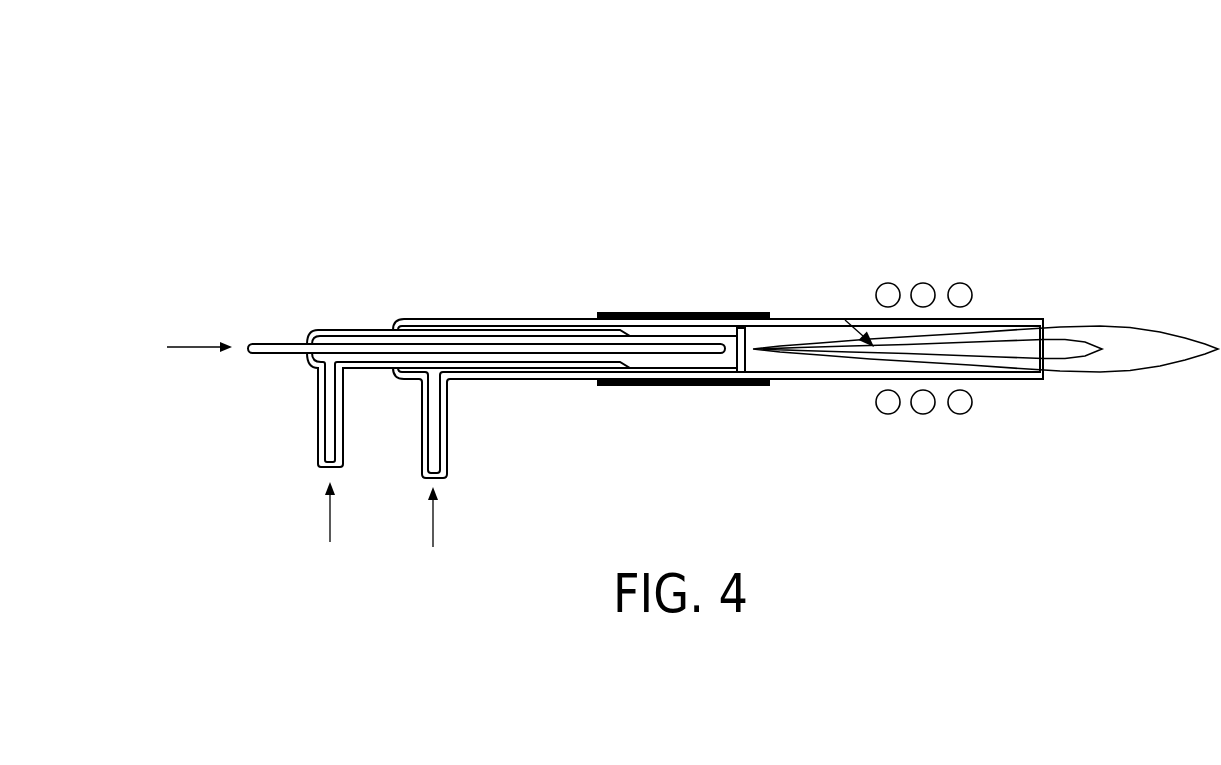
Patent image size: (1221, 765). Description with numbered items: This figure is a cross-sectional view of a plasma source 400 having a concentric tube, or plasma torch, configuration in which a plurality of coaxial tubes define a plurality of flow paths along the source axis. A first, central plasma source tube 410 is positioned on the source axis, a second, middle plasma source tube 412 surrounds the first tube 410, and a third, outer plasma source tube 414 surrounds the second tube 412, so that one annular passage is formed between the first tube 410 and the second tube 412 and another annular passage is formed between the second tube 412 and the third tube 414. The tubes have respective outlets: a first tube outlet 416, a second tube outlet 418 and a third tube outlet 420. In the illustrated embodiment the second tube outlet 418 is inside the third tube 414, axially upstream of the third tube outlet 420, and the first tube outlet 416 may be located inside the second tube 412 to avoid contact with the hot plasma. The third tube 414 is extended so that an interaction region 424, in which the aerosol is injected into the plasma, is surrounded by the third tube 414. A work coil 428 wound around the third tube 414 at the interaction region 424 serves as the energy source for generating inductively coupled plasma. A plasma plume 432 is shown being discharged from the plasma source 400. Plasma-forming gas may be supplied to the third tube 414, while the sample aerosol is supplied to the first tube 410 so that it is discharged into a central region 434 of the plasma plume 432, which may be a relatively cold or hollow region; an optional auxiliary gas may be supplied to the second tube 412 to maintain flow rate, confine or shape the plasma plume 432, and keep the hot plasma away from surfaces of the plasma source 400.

The plasma source 400 is at (200, 176).
The first plasma source tube 410 is at (543, 338).
The second plasma source tube 412 is at (450, 322).
The third plasma source tube 414 is at (503, 382).
The first tube outlet 416 is at (725, 370).
The second tube outlet 418 is at (752, 332).
The third tube outlet 420 is at (1028, 318).
The interaction region 424 is at (845, 320).
The work coil 428 is at (925, 284).
The plasma plume 432 is at (837, 357).
The central region 434 is at (938, 348).